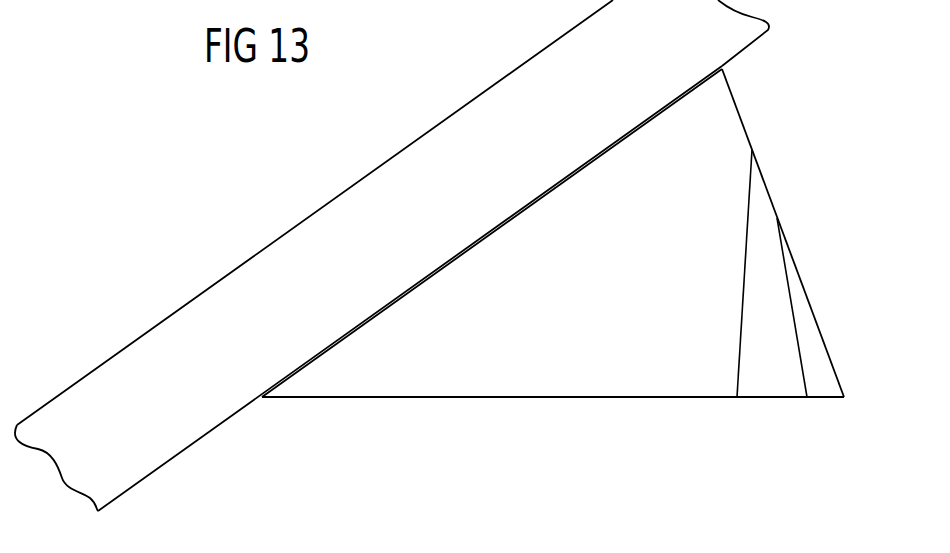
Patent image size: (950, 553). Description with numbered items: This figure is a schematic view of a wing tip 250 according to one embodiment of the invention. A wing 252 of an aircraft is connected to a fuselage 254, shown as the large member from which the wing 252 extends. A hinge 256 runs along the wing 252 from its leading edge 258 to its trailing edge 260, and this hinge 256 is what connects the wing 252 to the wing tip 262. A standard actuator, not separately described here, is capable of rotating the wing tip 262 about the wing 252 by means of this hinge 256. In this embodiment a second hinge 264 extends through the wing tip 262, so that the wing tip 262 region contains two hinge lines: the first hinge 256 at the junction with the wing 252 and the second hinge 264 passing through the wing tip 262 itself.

The wing tip 250 is at (370, 124).
The wing 252 is at (615, 309).
The fuselage 254 is at (434, 226).
The hinge 256 is at (738, 390).
The leading edge 258 is at (582, 397).
The trailing edge 260 is at (745, 131).
The wing tip 262 is at (805, 254).
The second hinge 264 is at (808, 392).